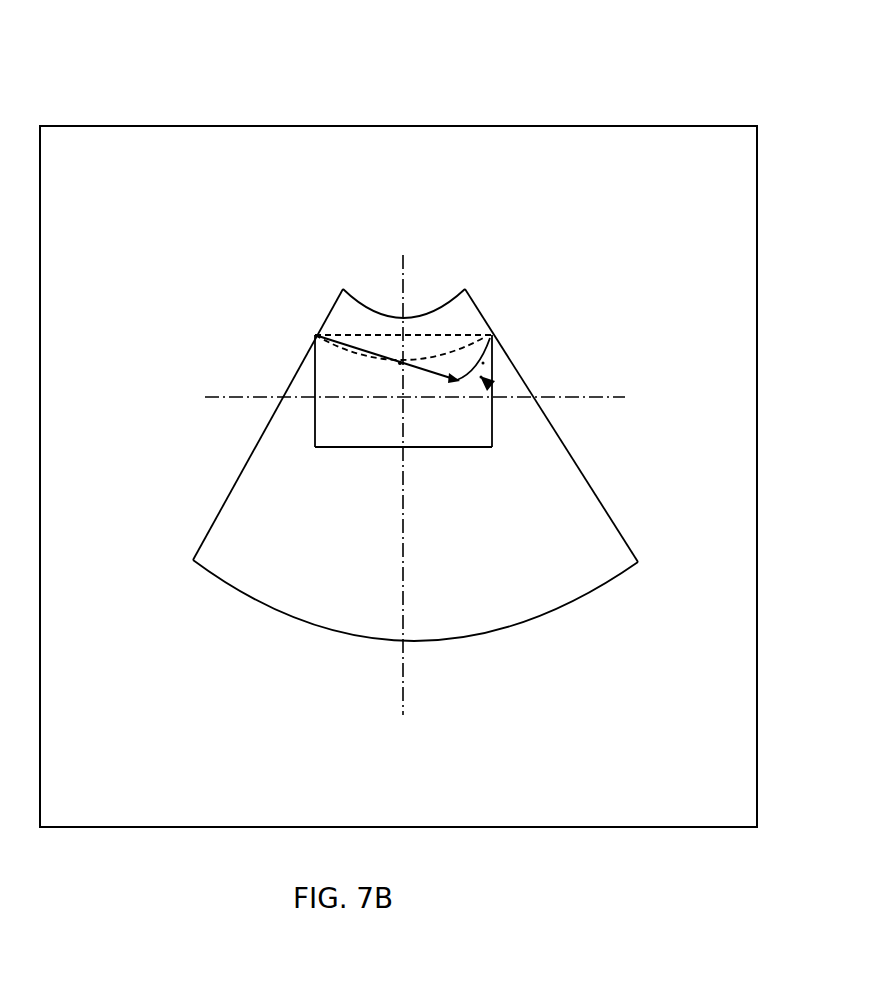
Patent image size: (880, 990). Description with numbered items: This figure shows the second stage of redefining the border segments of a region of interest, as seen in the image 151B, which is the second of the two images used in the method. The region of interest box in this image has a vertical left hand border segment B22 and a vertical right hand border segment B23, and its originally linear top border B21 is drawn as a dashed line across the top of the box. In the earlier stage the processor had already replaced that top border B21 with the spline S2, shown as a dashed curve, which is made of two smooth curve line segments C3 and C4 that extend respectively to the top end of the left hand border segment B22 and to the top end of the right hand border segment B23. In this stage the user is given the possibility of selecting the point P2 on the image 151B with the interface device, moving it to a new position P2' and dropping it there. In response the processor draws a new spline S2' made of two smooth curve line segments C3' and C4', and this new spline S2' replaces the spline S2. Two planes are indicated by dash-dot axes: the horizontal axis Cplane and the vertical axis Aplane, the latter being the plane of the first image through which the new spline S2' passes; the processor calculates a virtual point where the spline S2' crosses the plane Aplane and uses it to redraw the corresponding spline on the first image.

The image 151B is at (398, 436).
The top border B21 is at (429, 249).
The vertical left hand border segment B22 is at (221, 360).
The vertical right hand border segment B23 is at (607, 426).
The spline S2 is at (471, 288).
The new spline S2' is at (585, 418).
The curve line segment C3 is at (289, 302).
The curve line segment C3' is at (264, 403).
The curve line segment C4 is at (529, 339).
The curve line segment C4' is at (573, 384).
The point P2 is at (274, 430).
The new position P2' is at (590, 349).
The plane Cplane is at (480, 405).
The plane Aplane is at (439, 508).